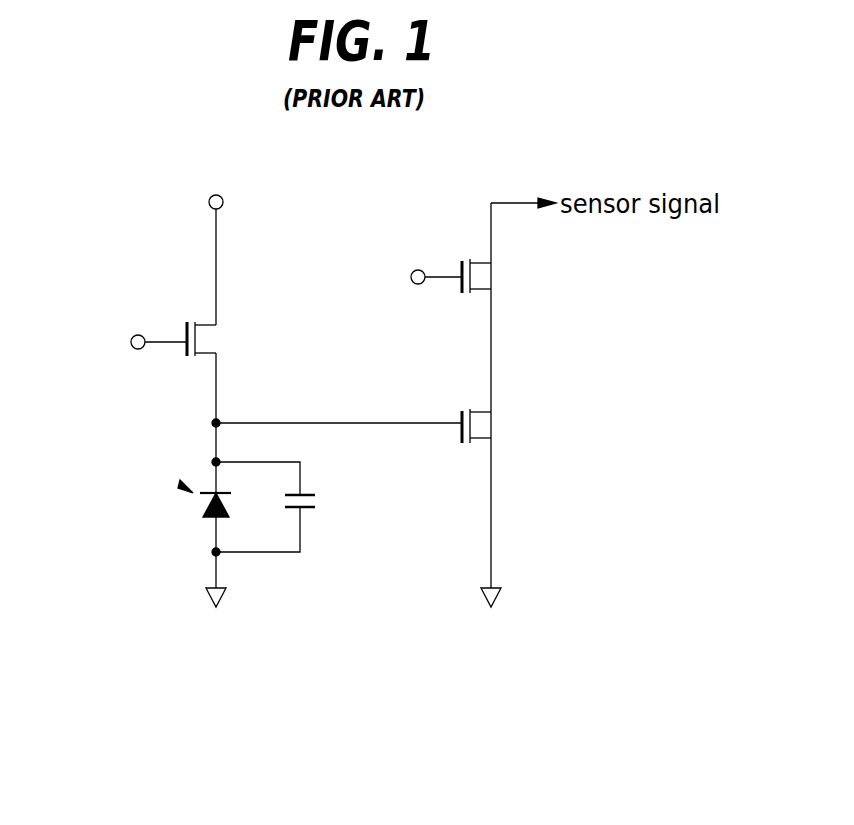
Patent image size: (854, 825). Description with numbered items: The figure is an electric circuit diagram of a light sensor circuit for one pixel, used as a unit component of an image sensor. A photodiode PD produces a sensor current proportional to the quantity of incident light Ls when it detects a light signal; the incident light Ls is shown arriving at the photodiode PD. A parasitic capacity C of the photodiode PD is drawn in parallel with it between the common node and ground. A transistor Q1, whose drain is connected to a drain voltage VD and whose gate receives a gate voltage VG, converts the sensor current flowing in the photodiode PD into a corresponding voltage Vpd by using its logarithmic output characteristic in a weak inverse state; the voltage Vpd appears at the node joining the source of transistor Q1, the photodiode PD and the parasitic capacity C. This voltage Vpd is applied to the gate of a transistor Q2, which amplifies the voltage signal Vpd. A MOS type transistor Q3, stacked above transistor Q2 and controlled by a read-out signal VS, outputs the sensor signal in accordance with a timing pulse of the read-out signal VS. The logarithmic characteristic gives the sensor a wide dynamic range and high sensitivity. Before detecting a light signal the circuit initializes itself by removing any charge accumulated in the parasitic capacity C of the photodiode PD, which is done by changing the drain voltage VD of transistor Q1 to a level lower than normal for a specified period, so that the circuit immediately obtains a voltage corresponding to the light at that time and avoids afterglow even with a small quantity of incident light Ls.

The transistor Q1 is at (210, 358).
The transistor Q2 is at (458, 411).
The MOS type transistor Q3 is at (460, 263).
The photodiode PD is at (191, 509).
The parasitic capacity C is at (282, 507).
The incident light Ls is at (190, 490).
The drain voltage VD is at (216, 241).
The gate voltage VG is at (137, 340).
The read-out signal VS is at (416, 274).
The voltage Vpd is at (337, 406).